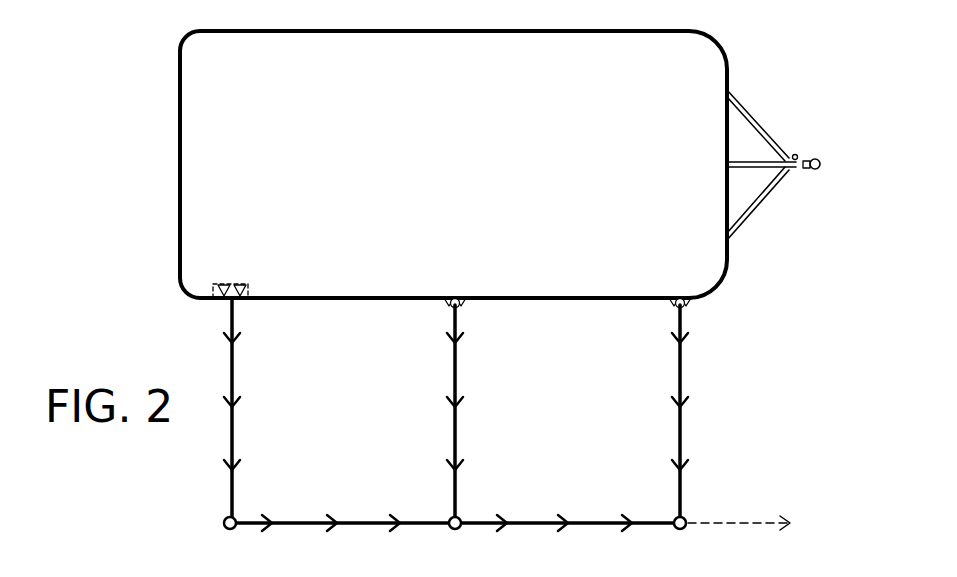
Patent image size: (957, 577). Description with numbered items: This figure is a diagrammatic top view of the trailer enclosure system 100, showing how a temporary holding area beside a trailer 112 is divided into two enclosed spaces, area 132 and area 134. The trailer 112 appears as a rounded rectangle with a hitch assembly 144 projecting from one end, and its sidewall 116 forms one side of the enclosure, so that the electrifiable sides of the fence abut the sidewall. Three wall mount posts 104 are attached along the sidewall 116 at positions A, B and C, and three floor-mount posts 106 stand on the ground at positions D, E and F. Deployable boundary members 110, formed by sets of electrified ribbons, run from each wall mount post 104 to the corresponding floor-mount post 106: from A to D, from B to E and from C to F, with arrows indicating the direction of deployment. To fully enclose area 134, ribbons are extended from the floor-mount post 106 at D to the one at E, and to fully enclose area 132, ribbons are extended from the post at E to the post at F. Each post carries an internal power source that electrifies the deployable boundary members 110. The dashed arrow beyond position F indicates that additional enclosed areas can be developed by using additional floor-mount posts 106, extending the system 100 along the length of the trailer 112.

The trailer enclosure system 100 is at (163, 503).
The wall mount post 104 is at (236, 301).
The floor-mount post 106 is at (234, 517).
The deployable boundary member 110 is at (457, 371).
The trailer 112 is at (160, 151).
The sidewall 116 is at (571, 300).
The area 132 is at (594, 419).
The area 134 is at (376, 419).
The hitch 144 is at (731, 95).